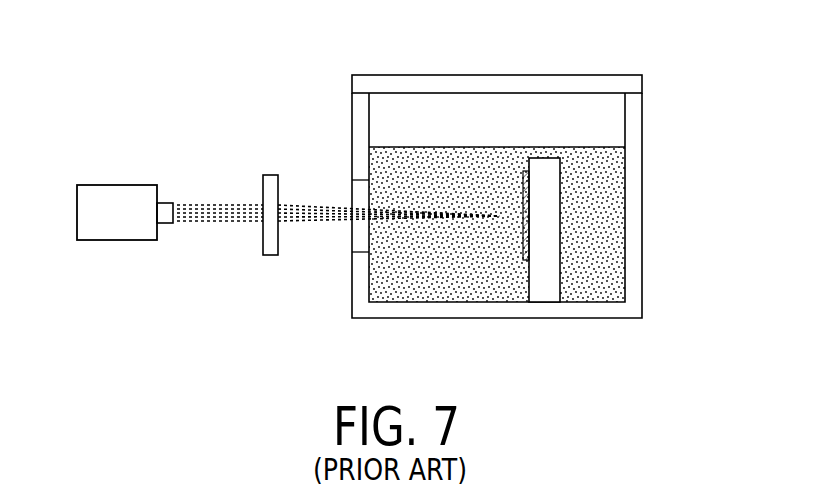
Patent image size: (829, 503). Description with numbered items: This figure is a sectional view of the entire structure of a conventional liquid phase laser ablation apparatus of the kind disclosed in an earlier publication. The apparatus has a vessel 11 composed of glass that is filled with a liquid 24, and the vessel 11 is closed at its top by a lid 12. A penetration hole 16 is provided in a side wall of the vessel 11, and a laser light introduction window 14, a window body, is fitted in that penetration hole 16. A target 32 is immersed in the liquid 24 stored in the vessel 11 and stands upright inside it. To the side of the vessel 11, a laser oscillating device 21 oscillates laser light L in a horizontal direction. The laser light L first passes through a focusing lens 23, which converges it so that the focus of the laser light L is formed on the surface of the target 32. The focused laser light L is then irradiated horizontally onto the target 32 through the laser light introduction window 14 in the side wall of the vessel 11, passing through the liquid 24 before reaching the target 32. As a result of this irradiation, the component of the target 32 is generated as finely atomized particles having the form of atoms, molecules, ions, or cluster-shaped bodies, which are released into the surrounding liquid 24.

The vessel 11 is at (353, 118).
The lid 12 is at (461, 85).
The laser light introduction window 14 is at (355, 238).
The penetration hole 16 is at (352, 181).
The laser oscillating device 21 is at (115, 185).
The focusing lens 23 is at (270, 175).
The liquid 24 is at (594, 196).
The target 32 is at (524, 262).
The laser light L is at (226, 224).